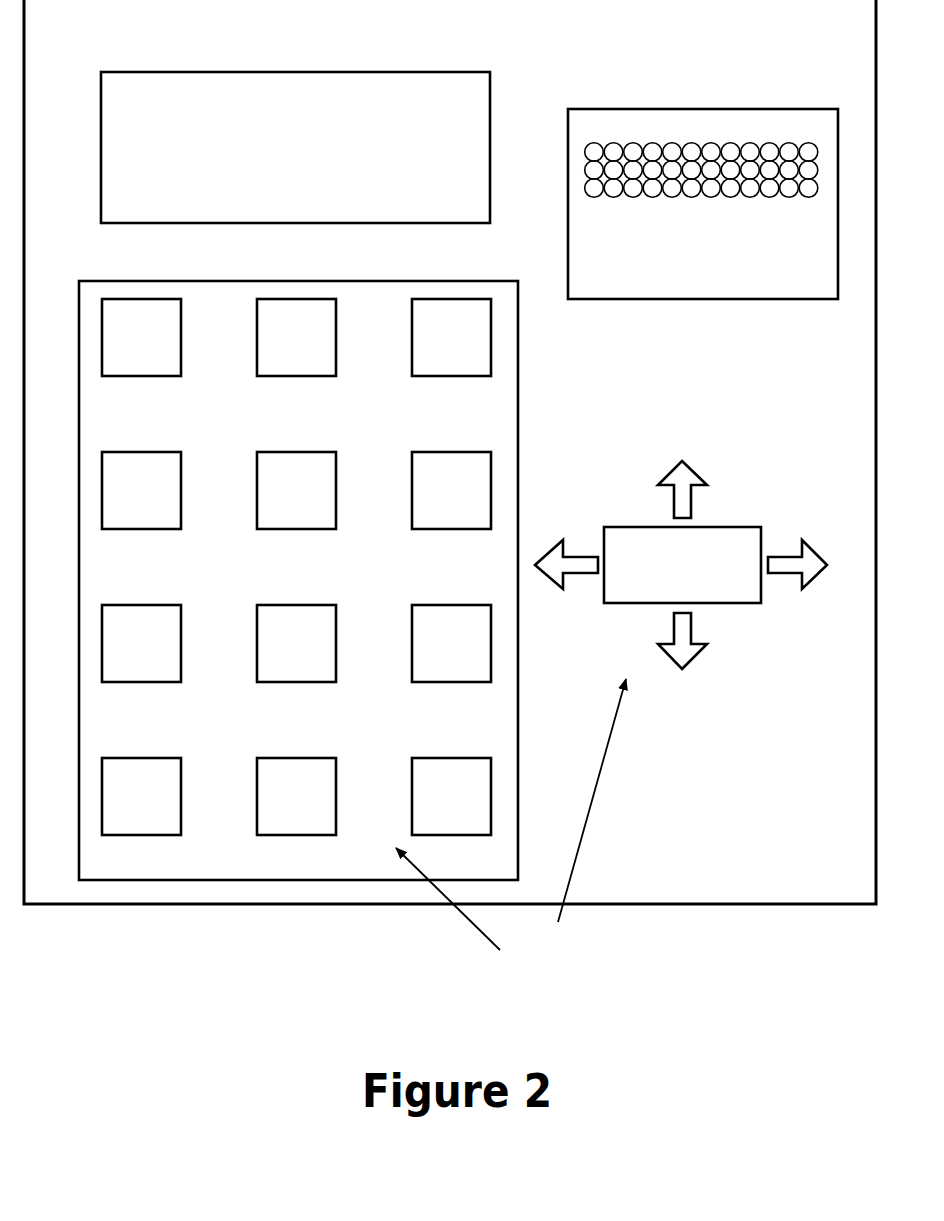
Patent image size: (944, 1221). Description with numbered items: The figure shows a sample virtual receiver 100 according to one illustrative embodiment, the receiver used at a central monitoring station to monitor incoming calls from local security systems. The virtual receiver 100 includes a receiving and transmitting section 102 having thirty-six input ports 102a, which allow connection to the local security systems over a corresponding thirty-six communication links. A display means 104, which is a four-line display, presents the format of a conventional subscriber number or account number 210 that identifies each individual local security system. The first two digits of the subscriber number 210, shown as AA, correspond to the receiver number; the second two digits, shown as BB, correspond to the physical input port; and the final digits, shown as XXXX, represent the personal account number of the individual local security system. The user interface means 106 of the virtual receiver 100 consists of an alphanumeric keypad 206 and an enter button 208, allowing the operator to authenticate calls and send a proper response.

The virtual receiver 100 is at (146, 905).
The display means 104 is at (355, 224).
The subscriber number 210 is at (199, 84).
The receiving and transmitting section 102 is at (753, 300).
The input ports 102a is at (700, 131).
The alphanumeric keypad 206 is at (519, 390).
The enter button 208 is at (752, 604).
The user interface means 106 is at (616, 1010).